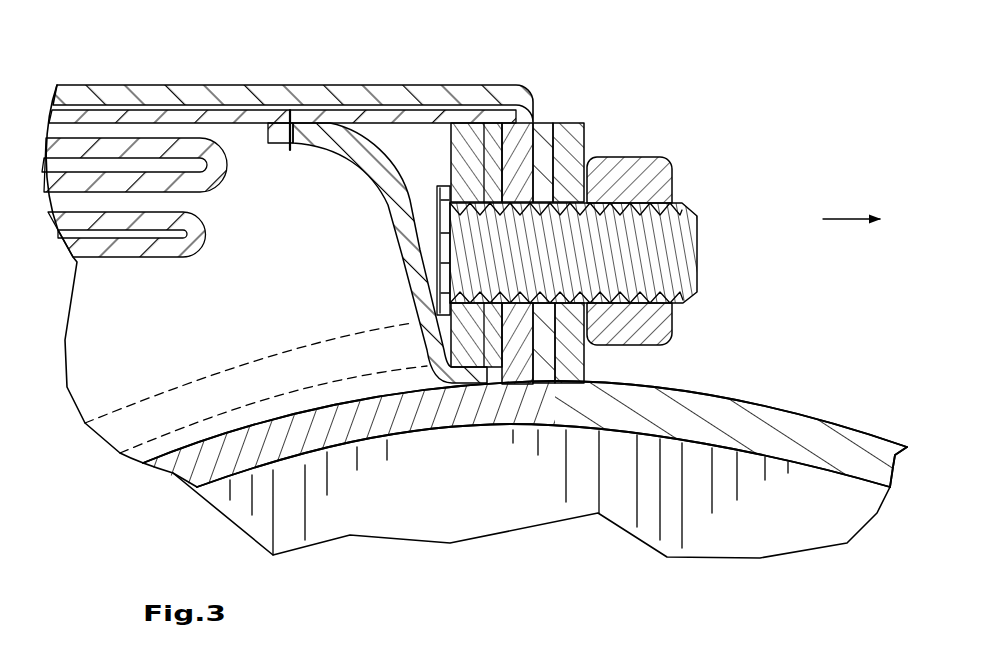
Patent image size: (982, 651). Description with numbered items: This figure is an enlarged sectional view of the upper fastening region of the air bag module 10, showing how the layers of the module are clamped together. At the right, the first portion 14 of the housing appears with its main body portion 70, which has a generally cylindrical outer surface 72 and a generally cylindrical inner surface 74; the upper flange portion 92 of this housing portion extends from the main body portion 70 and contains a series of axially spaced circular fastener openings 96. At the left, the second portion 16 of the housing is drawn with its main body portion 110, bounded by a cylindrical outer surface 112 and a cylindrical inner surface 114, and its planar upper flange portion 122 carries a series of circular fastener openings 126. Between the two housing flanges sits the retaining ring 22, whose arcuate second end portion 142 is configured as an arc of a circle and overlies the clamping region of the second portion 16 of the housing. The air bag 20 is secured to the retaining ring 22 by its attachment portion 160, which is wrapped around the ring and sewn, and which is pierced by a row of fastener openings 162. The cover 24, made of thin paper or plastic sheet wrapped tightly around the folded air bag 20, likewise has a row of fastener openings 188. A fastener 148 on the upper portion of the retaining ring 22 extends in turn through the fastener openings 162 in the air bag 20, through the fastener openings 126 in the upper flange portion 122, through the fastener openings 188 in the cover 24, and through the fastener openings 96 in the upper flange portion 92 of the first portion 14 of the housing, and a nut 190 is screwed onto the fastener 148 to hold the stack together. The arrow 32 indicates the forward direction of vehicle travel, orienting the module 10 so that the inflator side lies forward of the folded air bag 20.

The air bag module 10 is at (814, 146).
The first portion of the housing 14 is at (843, 414).
The second portion of the housing 16 is at (163, 482).
The air bag 20 is at (180, 268).
The retaining ring 22 is at (420, 170).
The cover 24 is at (185, 80).
The arrow indicating forward direction of vehicle travel 32 is at (832, 220).
The main body portion 70 is at (787, 412).
The outer surface 72 is at (728, 398).
The inner surface 74 is at (837, 470).
The upper flange portion 92 is at (560, 122).
The fastener openings 96 is at (588, 210).
The main body portion 110 is at (188, 445).
The outer surface 112 is at (217, 432).
The inner surface 114 is at (240, 477).
The upper flange portion 122 is at (517, 103).
The fastener openings 126 is at (519, 208).
The second end portion of the retaining ring 142 is at (325, 338).
The fasteners 148 is at (699, 228).
The attachment portion of the air bag 160 is at (400, 260).
The fastener openings 162 is at (492, 205).
The fastener openings 188 is at (493, 250).
The nuts 190 is at (627, 156).